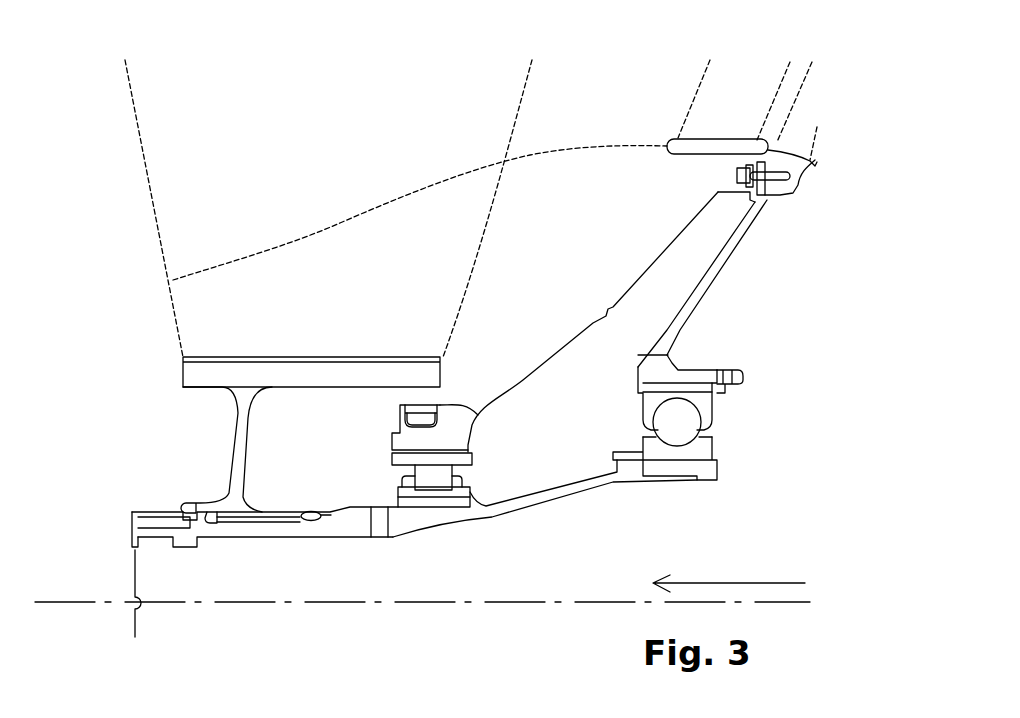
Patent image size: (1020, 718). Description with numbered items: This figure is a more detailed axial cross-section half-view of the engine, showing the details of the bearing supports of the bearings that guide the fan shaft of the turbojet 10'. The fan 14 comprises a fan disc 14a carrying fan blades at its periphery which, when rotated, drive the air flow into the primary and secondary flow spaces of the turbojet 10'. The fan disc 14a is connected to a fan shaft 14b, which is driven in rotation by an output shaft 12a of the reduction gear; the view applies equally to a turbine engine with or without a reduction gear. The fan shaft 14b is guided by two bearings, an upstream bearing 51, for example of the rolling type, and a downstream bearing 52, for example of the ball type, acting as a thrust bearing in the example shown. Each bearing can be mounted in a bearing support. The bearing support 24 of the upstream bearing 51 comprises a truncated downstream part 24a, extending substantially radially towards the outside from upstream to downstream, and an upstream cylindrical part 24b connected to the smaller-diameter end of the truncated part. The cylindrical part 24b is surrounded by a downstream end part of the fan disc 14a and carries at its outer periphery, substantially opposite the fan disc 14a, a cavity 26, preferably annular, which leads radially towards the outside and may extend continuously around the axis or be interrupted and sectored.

The turbojet 10' is at (878, 201).
The output shaft 12a is at (135, 618).
The fan 14 is at (110, 114).
The fan disc 14a is at (195, 380).
The fan shaft 14b is at (235, 462).
The bearing support 24 is at (644, 235).
The truncated downstream part 24a is at (748, 197).
The upstream cylindrical part 24b is at (463, 416).
The cavity 26 is at (420, 411).
The upstream bearing 51 is at (432, 483).
The downstream bearing 52 is at (677, 430).